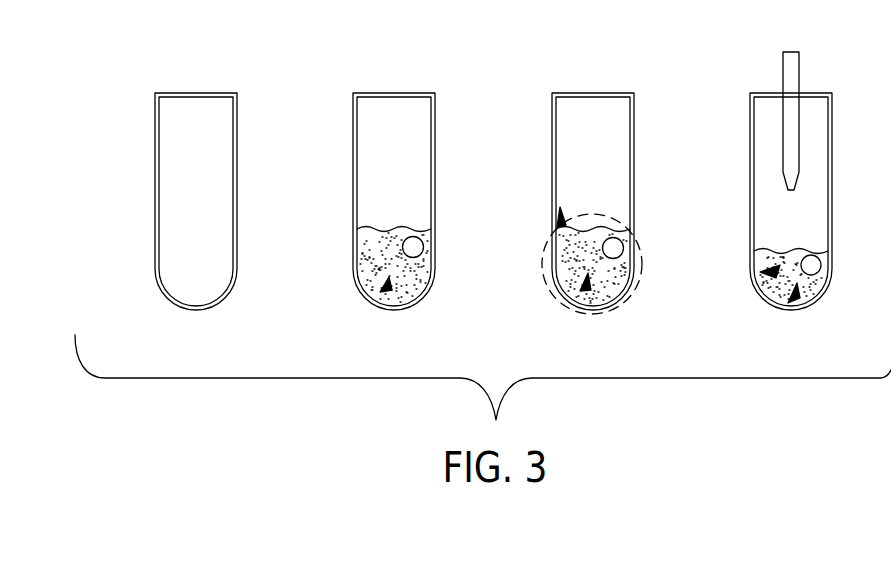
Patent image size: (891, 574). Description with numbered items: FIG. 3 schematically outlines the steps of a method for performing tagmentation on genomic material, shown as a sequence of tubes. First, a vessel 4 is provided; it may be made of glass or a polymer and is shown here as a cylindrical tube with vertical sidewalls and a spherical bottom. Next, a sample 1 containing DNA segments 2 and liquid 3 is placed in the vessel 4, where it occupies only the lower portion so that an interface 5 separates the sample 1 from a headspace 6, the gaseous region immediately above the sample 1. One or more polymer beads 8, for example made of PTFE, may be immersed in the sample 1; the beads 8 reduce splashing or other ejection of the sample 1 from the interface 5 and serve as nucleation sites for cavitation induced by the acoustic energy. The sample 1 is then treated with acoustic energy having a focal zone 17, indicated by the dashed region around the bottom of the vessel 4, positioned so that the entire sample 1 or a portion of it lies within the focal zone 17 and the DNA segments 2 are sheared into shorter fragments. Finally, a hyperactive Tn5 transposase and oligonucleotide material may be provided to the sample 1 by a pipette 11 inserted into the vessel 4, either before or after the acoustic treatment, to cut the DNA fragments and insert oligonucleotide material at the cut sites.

The sample 1 is at (386, 287).
The DNA segments 2 is at (360, 270).
The liquid 3 is at (358, 237).
The vessel 4 is at (168, 227).
The interface 5 is at (368, 227).
The headspace 6 is at (422, 142).
The beads 8 is at (425, 248).
The pipette 11 is at (802, 63).
The focal zone 17 is at (613, 307).